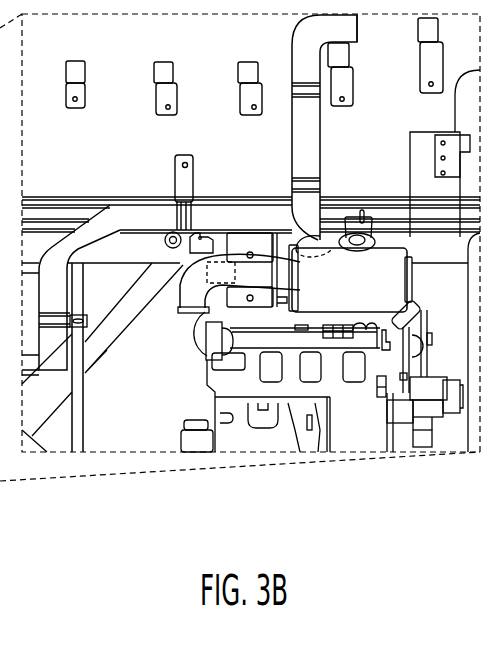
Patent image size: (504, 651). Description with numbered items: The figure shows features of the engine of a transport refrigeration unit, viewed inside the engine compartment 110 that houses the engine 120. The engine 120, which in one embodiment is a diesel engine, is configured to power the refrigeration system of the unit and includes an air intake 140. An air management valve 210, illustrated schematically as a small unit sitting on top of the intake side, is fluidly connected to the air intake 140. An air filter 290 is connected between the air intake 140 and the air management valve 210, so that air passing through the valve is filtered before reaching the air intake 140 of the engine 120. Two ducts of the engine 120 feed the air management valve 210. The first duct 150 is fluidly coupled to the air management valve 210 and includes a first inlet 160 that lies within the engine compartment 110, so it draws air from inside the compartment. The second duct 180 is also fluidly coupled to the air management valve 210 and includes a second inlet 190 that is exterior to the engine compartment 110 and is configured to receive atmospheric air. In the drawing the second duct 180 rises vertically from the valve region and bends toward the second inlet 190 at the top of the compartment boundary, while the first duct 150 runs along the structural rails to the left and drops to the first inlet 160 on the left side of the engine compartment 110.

The engine compartment 110 is at (147, 83).
The engine 120 is at (392, 340).
The air intake 140 is at (196, 296).
The first duct 150 is at (133, 217).
The first inlet 160 is at (58, 356).
The second duct 180 is at (312, 145).
The second inlet 190 is at (360, 20).
The air management valve 210 is at (344, 222).
The air filter 290 is at (377, 288).